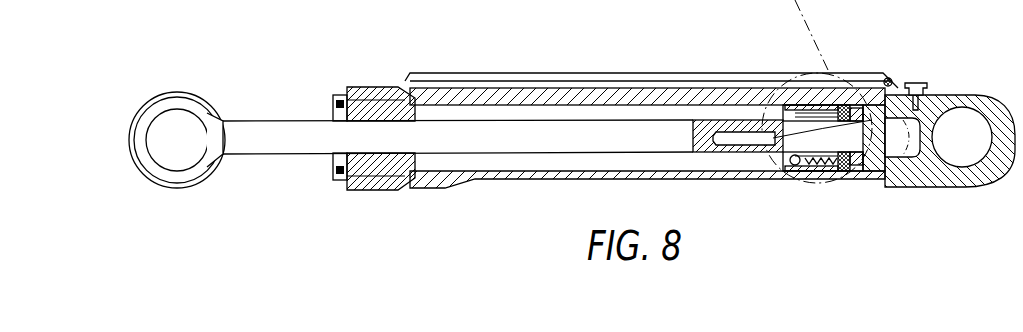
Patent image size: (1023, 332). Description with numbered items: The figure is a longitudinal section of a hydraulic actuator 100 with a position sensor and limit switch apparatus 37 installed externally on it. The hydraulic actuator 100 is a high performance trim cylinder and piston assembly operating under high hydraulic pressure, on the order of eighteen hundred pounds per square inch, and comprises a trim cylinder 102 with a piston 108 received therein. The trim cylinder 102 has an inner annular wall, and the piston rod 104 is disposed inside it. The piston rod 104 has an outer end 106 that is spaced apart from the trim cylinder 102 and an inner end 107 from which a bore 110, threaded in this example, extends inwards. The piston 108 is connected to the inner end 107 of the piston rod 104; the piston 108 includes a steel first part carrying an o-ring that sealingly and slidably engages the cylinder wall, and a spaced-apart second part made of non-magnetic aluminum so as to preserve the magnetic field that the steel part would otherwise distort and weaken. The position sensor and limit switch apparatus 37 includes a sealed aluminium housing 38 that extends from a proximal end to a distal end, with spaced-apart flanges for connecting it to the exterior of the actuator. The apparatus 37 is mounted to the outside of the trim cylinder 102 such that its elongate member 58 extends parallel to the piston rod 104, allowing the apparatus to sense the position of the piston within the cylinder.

The hydraulic actuator 100 is at (893, 57).
The position sensor and limit switch apparatus 37 is at (487, 72).
The sealed housing 38 is at (557, 72).
The elongate member 58 is at (413, 74).
The trim cylinder 102 is at (570, 179).
The piston rod 104 is at (502, 147).
The outer end 106 is at (177, 173).
The inner end 107 is at (827, 115).
The piston 108 is at (813, 181).
The bore 110 is at (762, 140).